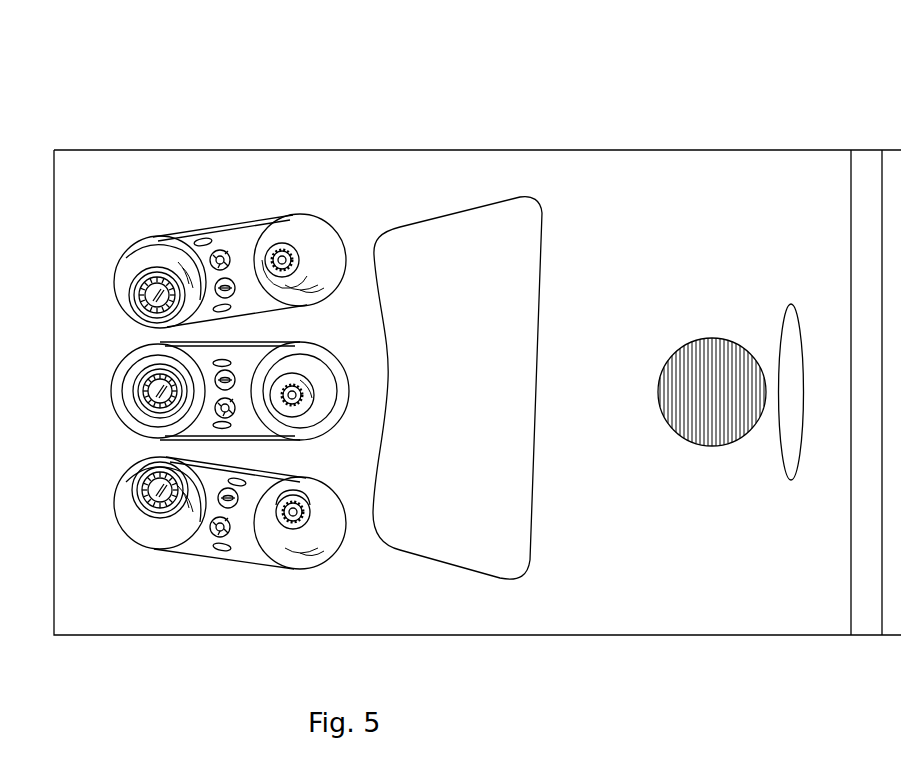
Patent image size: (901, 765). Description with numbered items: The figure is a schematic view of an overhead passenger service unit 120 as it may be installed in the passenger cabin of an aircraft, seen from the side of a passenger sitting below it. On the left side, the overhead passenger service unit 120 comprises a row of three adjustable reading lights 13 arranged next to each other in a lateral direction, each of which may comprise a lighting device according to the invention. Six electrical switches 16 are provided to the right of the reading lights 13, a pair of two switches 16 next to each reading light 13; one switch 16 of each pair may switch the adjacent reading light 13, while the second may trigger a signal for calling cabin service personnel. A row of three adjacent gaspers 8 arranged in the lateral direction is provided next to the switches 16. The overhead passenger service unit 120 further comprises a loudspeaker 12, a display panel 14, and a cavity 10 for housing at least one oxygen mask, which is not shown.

The overhead passenger service unit 120 is at (818, 105).
The cavity 10 is at (535, 300).
The loudspeaker 12 is at (726, 333).
The display panel 14 is at (802, 345).
The adjustable reading light 13 is at (156, 265).
The gasper 8 is at (290, 233).
The electrical switch 16 is at (220, 238).